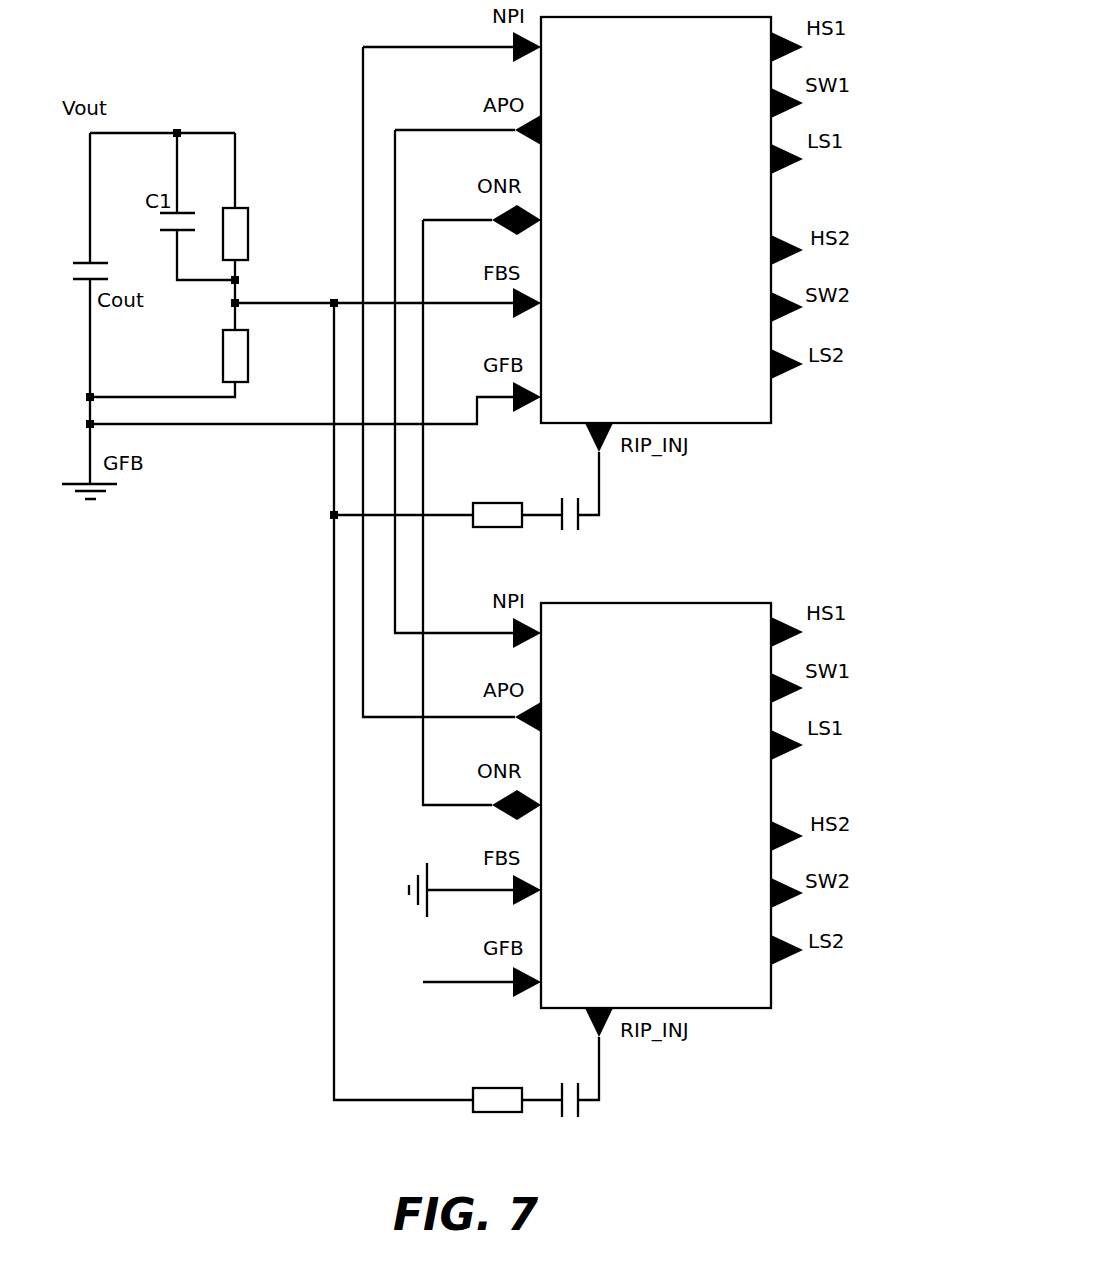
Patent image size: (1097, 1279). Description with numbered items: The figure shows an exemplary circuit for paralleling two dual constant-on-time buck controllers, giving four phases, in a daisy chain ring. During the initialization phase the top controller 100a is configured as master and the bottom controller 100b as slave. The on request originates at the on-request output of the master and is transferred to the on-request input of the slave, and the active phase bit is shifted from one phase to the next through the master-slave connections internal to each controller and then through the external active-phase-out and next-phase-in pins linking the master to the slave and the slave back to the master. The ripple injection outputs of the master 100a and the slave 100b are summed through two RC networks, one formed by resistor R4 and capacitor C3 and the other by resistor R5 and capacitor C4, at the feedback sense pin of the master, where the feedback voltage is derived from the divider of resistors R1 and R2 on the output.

The top controller 100a is at (681, 268).
The bottom controller 100b is at (686, 867).
The feedback resistor R1 is at (252, 206).
The feedback resistor R2 is at (186, 338).
The ripple injection resistor R4 is at (448, 530).
The ripple injection capacitor C3 is at (577, 504).
The ripple injection resistor R5 is at (517, 1115).
The ripple injection capacitor C4 is at (577, 1090).